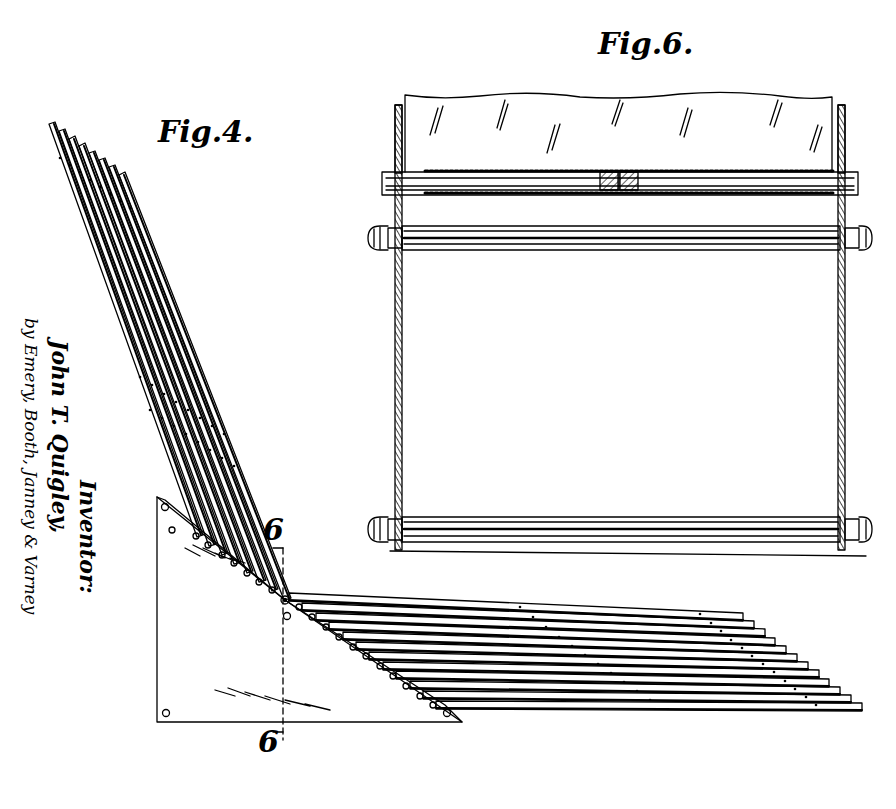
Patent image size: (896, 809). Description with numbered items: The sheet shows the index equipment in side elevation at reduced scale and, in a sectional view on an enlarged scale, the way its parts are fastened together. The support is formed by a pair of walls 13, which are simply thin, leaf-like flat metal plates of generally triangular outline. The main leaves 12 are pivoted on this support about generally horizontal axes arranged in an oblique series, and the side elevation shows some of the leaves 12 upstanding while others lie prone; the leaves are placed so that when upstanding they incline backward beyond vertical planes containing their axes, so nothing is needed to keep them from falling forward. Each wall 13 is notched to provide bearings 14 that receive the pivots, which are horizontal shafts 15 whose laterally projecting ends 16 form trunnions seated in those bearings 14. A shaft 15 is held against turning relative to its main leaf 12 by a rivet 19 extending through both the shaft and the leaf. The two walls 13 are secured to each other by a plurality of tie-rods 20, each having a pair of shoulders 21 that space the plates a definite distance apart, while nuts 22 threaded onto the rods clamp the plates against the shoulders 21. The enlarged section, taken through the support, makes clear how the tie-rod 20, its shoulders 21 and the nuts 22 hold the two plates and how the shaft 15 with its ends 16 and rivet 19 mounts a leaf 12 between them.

In FIG. 4, the main leaf 12 is at (190, 357).
In FIG. 6, the main leaf 12 is at (722, 96).
In FIG. 4, the wall 13 is at (362, 714).
In FIG. 6, the wall 13 is at (394, 338).
In FIG. 6, the bearing 14 is at (397, 196).
In FIG. 6, the horizontal shaft 15 is at (636, 172).
In FIG. 6, the laterally projecting end 16 is at (392, 172).
In FIG. 6, the rivet 19 is at (618, 194).
In FIG. 6, the tie-rod 20 is at (628, 250).
In FIG. 6, the shoulder 21 is at (412, 232).
In FIG. 4, the nut 22 is at (283, 612).
In FIG. 6, the nut 22 is at (375, 252).